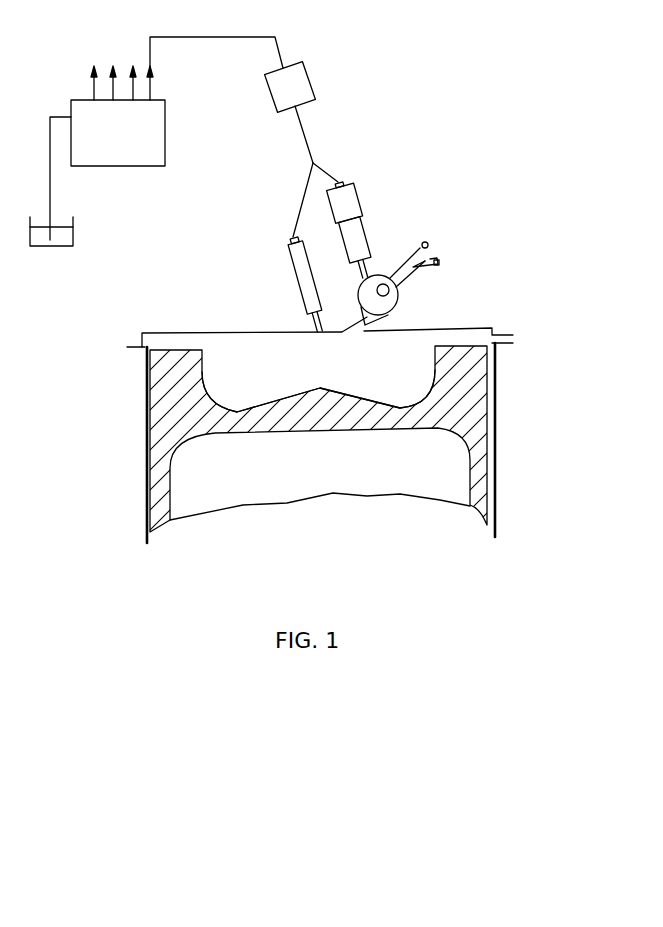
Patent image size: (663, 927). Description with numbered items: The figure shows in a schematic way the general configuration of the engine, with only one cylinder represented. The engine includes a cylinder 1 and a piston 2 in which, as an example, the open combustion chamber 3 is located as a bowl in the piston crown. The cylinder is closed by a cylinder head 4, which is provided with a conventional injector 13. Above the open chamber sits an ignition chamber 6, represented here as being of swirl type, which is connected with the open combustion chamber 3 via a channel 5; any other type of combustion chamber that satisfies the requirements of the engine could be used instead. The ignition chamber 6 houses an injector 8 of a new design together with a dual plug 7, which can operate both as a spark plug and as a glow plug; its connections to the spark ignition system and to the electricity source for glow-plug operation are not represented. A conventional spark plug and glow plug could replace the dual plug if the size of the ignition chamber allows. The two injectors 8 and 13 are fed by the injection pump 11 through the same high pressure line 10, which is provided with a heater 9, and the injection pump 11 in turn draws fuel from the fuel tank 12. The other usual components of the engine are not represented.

The cylinder 1 is at (498, 512).
The piston 2 is at (475, 435).
The open combustion chamber 3 is at (393, 380).
The cylinder head 4 is at (494, 331).
The channel 5 is at (368, 322).
The ignition chamber 6 is at (380, 305).
The dual plug 7 is at (438, 262).
The injector 8 is at (347, 199).
The heater 9 is at (300, 78).
The high pressure line 10 is at (212, 37).
The injection pump 11 is at (155, 128).
The fuel tank 12 is at (63, 240).
The conventional injector 13 is at (302, 266).